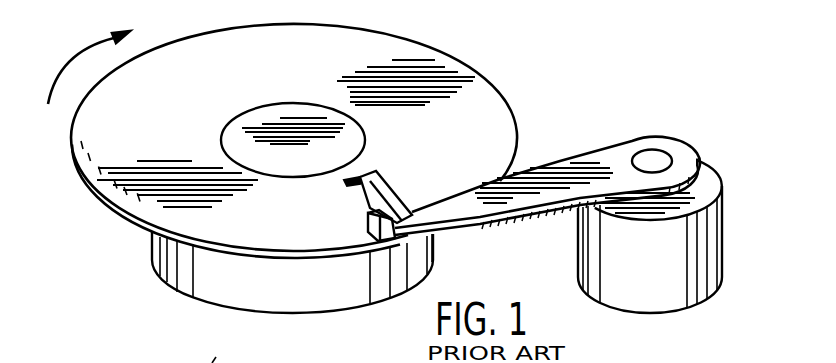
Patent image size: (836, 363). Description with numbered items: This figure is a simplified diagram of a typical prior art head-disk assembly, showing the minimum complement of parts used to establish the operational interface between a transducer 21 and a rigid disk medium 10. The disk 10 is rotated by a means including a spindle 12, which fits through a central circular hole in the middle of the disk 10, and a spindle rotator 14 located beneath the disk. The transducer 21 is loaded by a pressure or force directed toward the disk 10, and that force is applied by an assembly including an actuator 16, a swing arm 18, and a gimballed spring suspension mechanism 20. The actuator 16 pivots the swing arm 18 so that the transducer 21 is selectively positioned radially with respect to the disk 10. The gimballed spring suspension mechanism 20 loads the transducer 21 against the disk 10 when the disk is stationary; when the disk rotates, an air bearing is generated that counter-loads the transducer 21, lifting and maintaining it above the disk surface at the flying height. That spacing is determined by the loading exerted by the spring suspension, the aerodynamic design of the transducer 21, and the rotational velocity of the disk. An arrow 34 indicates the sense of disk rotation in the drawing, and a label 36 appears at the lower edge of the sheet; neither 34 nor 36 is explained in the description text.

The rigid disk medium 10 is at (477, 85).
The spindle 12 is at (263, 118).
The spindle rotator 14 is at (218, 285).
The actuator 16 is at (710, 243).
The swing arm 18 is at (544, 166).
The gimballed spring suspension mechanism 20 is at (385, 185).
The transducer 21 is at (352, 180).
The direction of disk rotation 34 is at (67, 75).
The base 36 is at (229, 356).